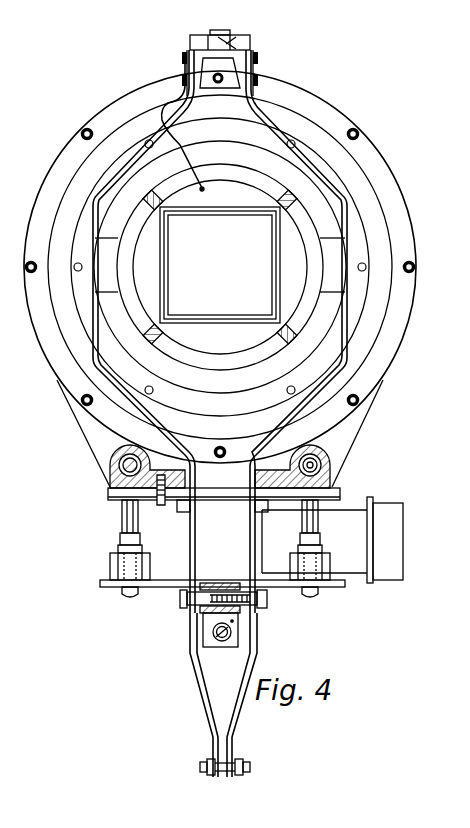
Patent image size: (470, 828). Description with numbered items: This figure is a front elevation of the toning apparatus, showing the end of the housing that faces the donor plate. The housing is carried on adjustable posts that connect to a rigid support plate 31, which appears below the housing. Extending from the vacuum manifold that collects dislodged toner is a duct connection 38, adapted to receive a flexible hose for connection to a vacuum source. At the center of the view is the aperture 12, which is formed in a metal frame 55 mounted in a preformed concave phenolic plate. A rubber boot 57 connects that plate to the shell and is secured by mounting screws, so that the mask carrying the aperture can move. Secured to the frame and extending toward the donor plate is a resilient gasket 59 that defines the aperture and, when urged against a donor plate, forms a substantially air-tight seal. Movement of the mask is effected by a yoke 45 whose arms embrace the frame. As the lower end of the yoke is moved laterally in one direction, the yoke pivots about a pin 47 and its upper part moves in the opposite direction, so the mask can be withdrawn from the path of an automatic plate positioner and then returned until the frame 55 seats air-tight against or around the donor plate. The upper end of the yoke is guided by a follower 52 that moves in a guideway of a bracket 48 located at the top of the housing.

The aperture 12 is at (198, 293).
The rigid support plate 31 is at (345, 588).
The duct connection 38 is at (392, 533).
The yoke 45 is at (288, 428).
The pin 47 is at (182, 602).
The bracket 48 is at (190, 41).
The follower 52 is at (250, 40).
The metal frame 55 is at (290, 118).
The rubber boot 57 is at (122, 130).
The resilient gasket 59 is at (170, 253).